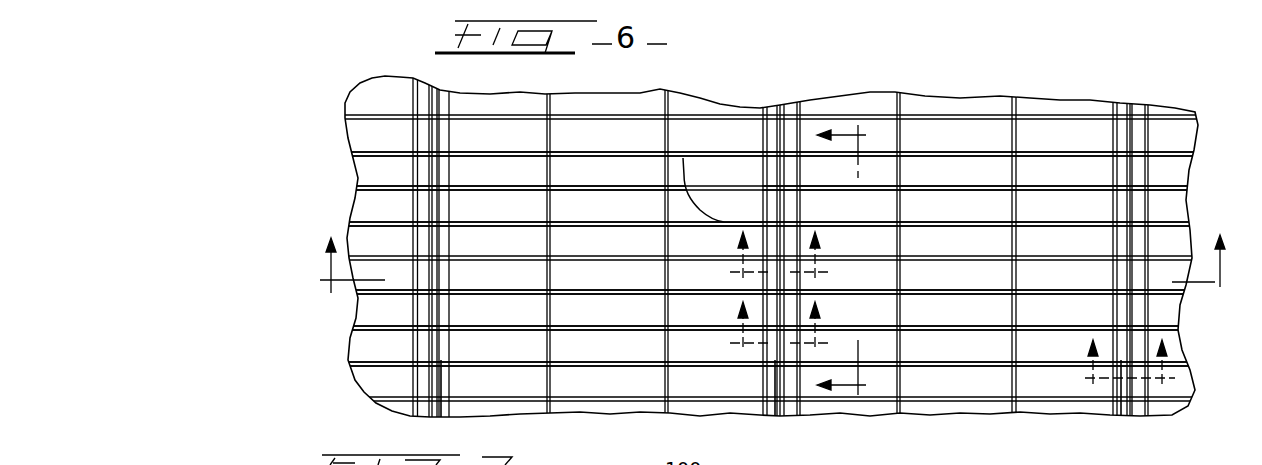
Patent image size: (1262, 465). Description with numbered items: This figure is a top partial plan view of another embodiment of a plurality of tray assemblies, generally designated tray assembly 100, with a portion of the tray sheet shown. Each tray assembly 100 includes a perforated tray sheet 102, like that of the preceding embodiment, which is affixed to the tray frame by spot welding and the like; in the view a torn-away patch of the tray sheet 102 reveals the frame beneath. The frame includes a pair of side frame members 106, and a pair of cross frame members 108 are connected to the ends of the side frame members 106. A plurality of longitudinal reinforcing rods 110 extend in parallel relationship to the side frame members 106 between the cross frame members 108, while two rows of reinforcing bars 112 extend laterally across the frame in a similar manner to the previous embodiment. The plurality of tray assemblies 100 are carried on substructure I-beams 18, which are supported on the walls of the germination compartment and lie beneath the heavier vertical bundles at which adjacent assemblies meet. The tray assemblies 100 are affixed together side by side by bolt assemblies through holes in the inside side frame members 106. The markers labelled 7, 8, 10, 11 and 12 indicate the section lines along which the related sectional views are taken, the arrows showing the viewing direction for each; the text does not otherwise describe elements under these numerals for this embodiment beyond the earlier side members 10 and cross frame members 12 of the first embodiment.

The tray assembly 100 is at (468, 204).
The perforated tray sheet 102 is at (742, 193).
The side frame members 106 is at (590, 148).
The cross frame members 108 is at (421, 239).
The longitudinal reinforcing rods 110 is at (510, 300).
The reinforcing bars 112 is at (903, 272).
The substructure I-beams 18 is at (441, 410).
The section line 7- 7 is at (773, 269).
The section line 8- 8 is at (850, 260).
The side members 10 is at (781, 261).
The section line 11- 11 is at (784, 329).
The cross frame members 12 is at (1128, 368).